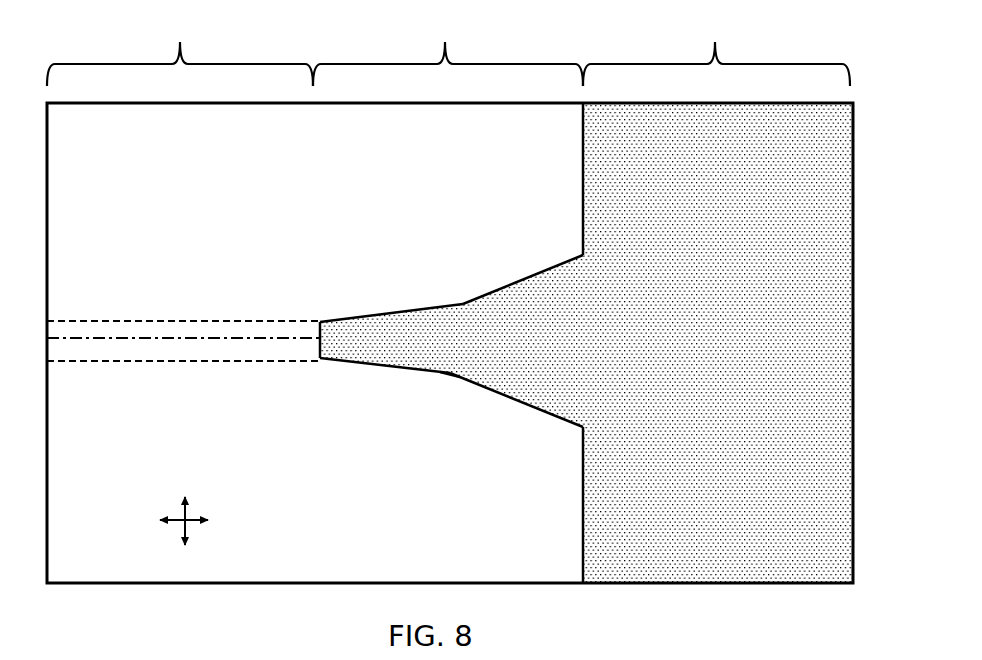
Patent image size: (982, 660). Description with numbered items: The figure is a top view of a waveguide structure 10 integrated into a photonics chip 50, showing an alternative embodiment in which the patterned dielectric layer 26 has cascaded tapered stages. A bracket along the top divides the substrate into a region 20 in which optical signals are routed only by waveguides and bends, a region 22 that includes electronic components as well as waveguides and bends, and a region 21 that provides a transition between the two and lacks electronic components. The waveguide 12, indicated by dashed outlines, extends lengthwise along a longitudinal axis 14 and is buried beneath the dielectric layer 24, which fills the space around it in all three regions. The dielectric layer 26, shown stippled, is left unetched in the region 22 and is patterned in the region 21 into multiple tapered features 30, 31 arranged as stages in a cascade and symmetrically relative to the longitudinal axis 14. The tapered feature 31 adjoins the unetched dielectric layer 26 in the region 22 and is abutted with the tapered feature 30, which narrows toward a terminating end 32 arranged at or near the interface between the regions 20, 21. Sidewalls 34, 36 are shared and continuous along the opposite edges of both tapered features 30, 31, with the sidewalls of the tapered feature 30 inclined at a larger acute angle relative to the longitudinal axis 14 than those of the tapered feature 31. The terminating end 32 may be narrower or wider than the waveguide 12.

The photonics chip 50 is at (125, 47).
The waveguide structure 10 is at (177, 189).
The region 20 is at (180, 49).
The region 21 is at (448, 220).
The region 22 is at (669, 298).
The dielectric layer 24 is at (107, 528).
The dielectric layer 26 is at (617, 203).
The waveguide 12 is at (122, 350).
The longitudinal axis 14 is at (77, 340).
The tapered feature 30 is at (398, 369).
The tapered feature 31 is at (518, 403).
The terminating end 32 is at (318, 350).
The sidewall 34 is at (490, 293).
The sidewall 36 is at (445, 373).